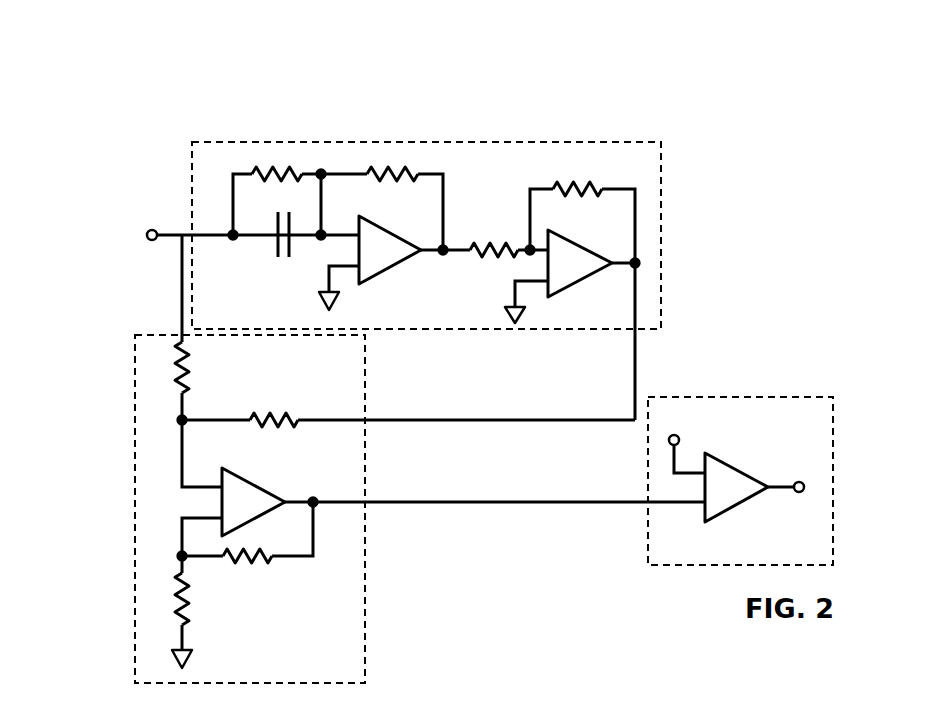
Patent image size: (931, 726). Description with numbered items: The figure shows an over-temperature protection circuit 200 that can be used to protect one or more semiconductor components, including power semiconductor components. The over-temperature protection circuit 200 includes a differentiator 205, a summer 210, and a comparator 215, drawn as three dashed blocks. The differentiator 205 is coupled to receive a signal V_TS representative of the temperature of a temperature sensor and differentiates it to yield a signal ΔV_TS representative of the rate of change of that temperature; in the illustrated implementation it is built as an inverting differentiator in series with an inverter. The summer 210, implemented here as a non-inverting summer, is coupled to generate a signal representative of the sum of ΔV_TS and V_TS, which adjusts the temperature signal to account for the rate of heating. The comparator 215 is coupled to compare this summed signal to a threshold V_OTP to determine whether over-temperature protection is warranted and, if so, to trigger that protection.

The over-temperature protection circuit 200 is at (93, 156).
The differentiator 205 is at (428, 141).
The summer 210 is at (135, 388).
The comparator 215 is at (825, 395).